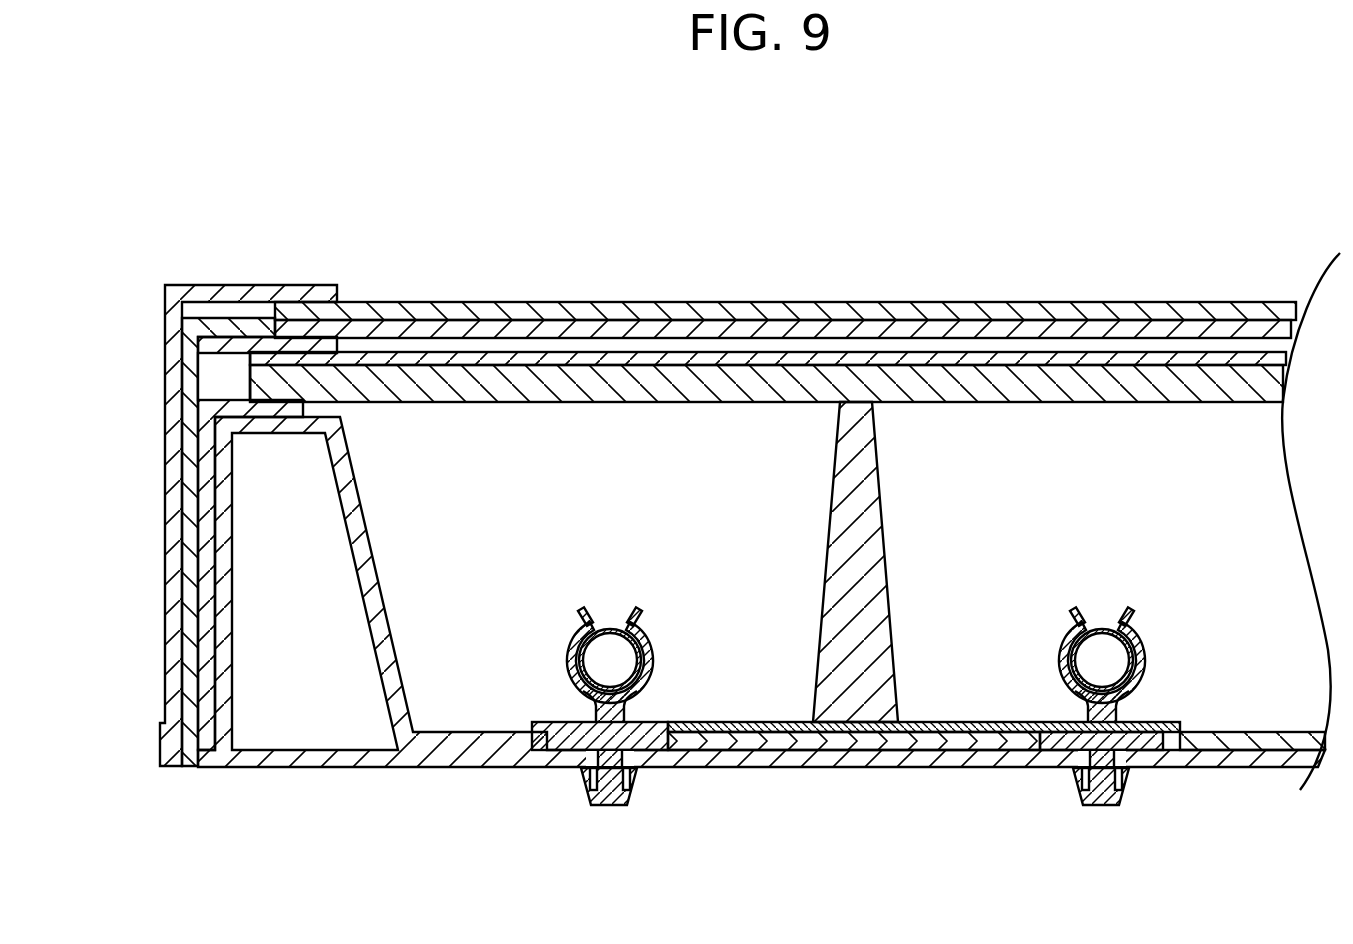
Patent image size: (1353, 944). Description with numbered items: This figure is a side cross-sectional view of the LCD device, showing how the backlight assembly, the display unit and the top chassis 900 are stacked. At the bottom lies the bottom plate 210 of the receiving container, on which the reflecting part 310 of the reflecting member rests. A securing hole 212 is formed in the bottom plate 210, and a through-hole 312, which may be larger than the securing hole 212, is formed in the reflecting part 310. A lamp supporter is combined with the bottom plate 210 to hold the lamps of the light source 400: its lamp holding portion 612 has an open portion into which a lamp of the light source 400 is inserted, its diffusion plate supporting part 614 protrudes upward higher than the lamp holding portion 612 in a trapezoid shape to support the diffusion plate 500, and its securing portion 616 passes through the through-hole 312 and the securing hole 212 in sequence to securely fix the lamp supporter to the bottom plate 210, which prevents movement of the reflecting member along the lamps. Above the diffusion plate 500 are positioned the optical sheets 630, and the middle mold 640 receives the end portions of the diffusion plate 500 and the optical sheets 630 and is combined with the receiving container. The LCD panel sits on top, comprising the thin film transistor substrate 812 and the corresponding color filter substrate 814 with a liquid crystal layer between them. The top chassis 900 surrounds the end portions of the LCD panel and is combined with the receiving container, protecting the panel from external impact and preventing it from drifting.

The top chassis 900 is at (175, 562).
The middle mold 640 is at (186, 490).
The bottom plate 210 is at (355, 752).
The securing hole 212 is at (607, 797).
The reflecting part 310 is at (997, 735).
The through-hole 312 is at (653, 745).
The light source 400 is at (1136, 660).
The diffusion plate 500 is at (487, 380).
The lamp holding portion 612 is at (650, 652).
The diffusion plate supporting part 614 is at (863, 692).
The securing portion 616 is at (583, 777).
The optical sheets 630 is at (634, 363).
The thin film transistor substrate 812 is at (930, 332).
The color filter substrate 814 is at (781, 310).